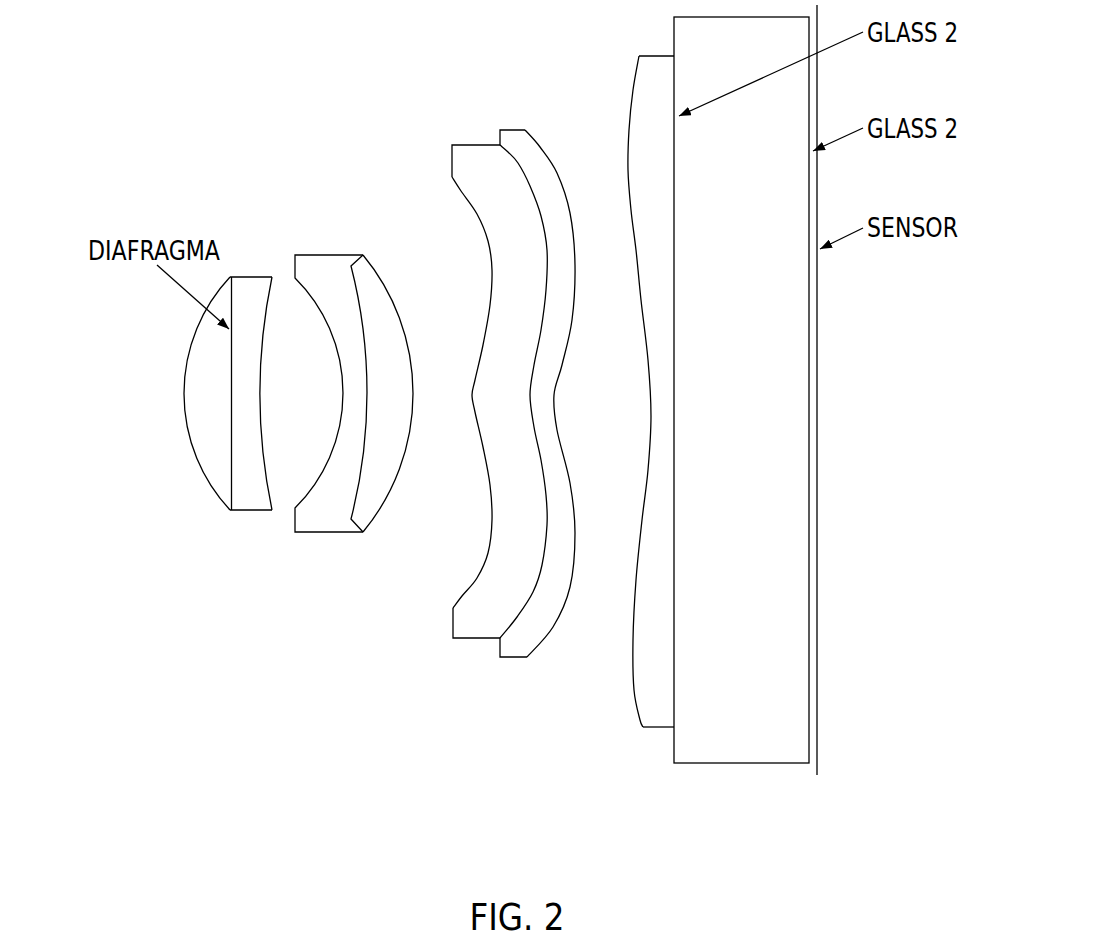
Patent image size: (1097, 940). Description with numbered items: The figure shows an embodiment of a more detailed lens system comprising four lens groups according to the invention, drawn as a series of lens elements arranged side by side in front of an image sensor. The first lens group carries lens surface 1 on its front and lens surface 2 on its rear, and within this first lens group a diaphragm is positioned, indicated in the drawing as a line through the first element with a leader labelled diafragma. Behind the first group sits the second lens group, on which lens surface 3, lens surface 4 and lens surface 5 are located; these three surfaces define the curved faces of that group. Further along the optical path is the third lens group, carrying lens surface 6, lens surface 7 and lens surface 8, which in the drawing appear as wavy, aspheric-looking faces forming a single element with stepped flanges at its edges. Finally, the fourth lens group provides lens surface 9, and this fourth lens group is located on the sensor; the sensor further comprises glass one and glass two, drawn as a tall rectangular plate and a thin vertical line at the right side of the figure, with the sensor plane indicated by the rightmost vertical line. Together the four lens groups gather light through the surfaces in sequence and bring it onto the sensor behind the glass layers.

The lens surface 1 is at (180, 377).
The lens surface 2 is at (258, 431).
The lens surface 3 is at (340, 385).
The lens surface 4 is at (366, 328).
The lens surface 5 is at (391, 488).
The lens surface 6 is at (489, 501).
The lens surface 7 is at (519, 158).
The lens surface 8 is at (553, 636).
The lens surface 9 is at (626, 156).